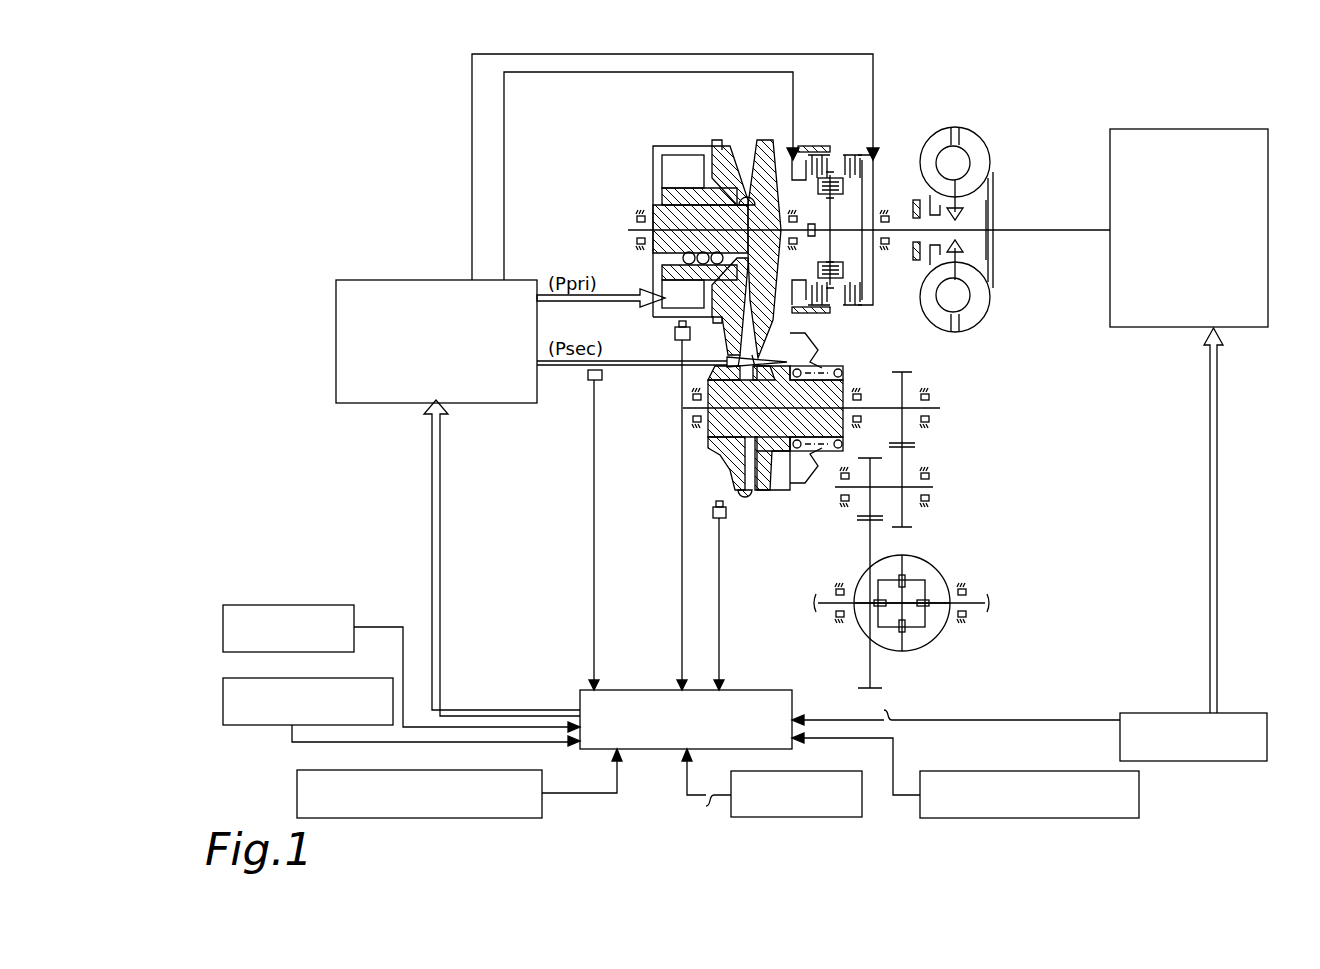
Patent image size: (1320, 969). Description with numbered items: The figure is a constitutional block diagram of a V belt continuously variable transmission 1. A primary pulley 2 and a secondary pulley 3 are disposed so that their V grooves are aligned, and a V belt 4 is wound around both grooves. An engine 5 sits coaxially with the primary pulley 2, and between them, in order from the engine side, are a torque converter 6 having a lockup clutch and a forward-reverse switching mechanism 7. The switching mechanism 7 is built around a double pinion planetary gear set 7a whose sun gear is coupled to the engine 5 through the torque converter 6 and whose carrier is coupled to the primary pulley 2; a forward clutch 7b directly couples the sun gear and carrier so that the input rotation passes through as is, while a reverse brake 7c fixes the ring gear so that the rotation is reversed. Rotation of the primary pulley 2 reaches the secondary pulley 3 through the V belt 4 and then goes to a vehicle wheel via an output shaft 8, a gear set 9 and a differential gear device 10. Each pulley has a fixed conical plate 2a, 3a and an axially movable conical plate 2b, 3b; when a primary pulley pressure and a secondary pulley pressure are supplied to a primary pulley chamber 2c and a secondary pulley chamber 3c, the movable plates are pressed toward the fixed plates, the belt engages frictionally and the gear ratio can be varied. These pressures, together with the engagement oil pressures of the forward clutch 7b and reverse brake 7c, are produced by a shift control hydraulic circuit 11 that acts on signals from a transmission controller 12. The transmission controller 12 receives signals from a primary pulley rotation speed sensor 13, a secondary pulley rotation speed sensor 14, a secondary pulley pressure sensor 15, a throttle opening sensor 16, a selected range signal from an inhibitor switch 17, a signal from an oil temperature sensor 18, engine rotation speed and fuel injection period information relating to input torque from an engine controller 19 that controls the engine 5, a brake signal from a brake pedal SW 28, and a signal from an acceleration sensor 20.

The V belt continuously variable transmission 1 is at (686, 222).
The primary pulley 2 is at (721, 218).
The fixed conical plate 2a is at (776, 140).
The movable conical plate 2b is at (723, 140).
The primary pulley chamber 2c is at (676, 170).
The secondary pulley 3 is at (811, 450).
The fixed conical plate 3a is at (722, 463).
The movable conical plate 3b is at (805, 495).
The secondary pulley chamber 3c is at (781, 492).
The V belt 4 is at (747, 190).
The engine 5 is at (1186, 129).
The torque converter 6 is at (955, 122).
The forward-reverse switching mechanism 7 is at (839, 184).
The double pinion planetary gear set 7a is at (846, 152).
The forward clutch 7b is at (856, 152).
The reverse brake 7c is at (836, 155).
The output shaft 8 is at (886, 408).
The gear set 9 is at (946, 437).
The differential gear device 10 is at (942, 552).
The shift control hydraulic circuit 11 is at (418, 280).
The transmission controller 12 is at (580, 698).
The primary pulley rotation speed sensor 13 is at (675, 334).
The secondary pulley rotation speed sensor 14 is at (720, 520).
The secondary pulley pressure sensor 15 is at (590, 382).
The throttle opening sensor 16 is at (433, 818).
The inhibitor switch 17 is at (810, 771).
The oil temperature sensor 18 is at (1139, 795).
The engine controller 19 is at (1251, 713).
The acceleration sensor 20 is at (262, 678).
The brake pedal SW 28 is at (253, 600).